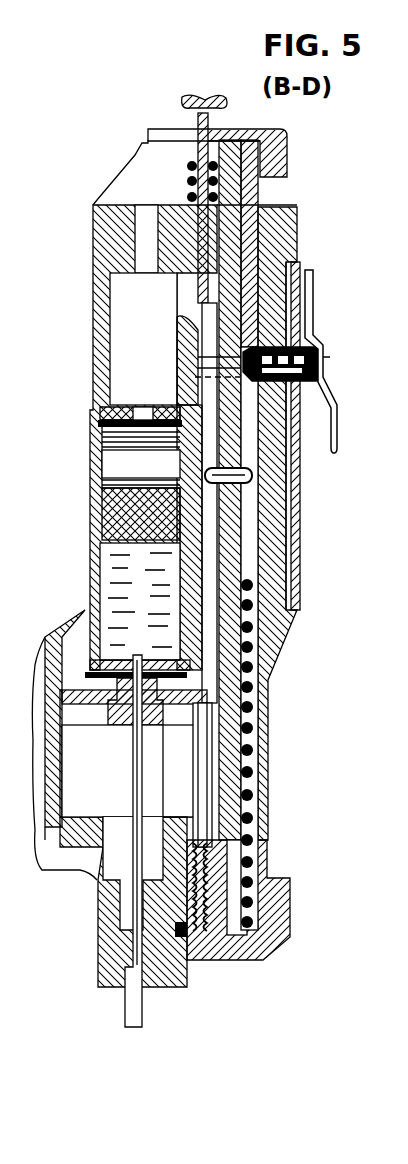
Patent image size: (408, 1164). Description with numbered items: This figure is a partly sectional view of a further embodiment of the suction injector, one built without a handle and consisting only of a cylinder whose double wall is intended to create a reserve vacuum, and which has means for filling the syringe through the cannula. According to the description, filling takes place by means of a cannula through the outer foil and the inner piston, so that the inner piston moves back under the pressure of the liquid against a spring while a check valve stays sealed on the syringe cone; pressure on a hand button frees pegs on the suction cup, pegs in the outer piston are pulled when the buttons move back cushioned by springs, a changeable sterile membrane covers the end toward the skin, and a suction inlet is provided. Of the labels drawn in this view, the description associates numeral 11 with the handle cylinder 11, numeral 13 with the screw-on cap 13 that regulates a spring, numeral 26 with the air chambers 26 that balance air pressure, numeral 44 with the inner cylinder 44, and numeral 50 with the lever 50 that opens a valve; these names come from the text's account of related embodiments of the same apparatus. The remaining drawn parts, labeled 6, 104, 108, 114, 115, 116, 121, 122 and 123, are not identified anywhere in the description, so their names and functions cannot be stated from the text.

The adjusting screw 108 is at (180, 300).
The spring retainer 114 is at (307, 342).
The spring 115 is at (322, 367).
The lever 116 is at (340, 399).
The piston 121 is at (190, 388).
The inner cylinder 44 is at (252, 477).
The lever 50 is at (275, 515).
The screw-on cap 13 is at (287, 618).
The plate 104 is at (237, 700).
The valve seat 122 is at (187, 708).
The rod 123 is at (207, 790).
The nut 6 is at (277, 882).
The handle cylinder 11 is at (207, 925).
The air chambers 26 is at (170, 965).